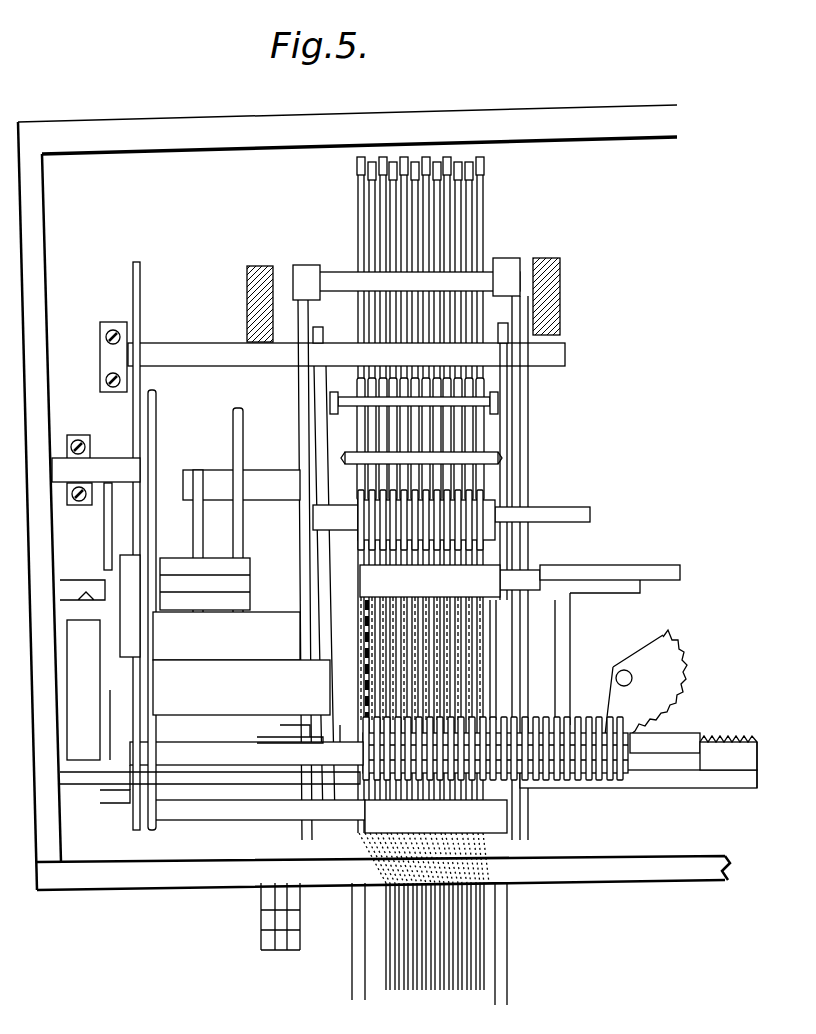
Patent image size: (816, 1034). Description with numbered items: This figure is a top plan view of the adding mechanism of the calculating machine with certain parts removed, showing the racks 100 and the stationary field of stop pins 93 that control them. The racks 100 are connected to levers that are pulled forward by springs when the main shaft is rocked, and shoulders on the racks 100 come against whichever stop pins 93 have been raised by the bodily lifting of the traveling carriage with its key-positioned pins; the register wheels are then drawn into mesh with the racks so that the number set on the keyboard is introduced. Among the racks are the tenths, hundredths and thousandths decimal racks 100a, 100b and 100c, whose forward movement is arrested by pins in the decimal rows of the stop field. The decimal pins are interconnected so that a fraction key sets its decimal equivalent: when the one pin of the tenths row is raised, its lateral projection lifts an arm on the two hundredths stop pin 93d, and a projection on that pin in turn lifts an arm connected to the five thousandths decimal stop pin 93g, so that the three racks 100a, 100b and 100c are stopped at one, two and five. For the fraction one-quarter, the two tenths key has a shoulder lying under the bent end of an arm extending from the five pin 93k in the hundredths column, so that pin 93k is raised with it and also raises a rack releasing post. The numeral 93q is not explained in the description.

The racks 100 is at (388, 203).
The tenths decimal rack 100a is at (449, 181).
The hundredths decimal rack 100b is at (470, 202).
The thousandths decimal rack 100c is at (482, 220).
The stop pins 93 is at (395, 688).
The "2" hundredths stop pin 93d is at (477, 622).
The "5" pin in the hundredths column 93k is at (473, 672).
The thousandths decimal stop pin 93g is at (500, 673).
The finger comb 93q is at (507, 708).